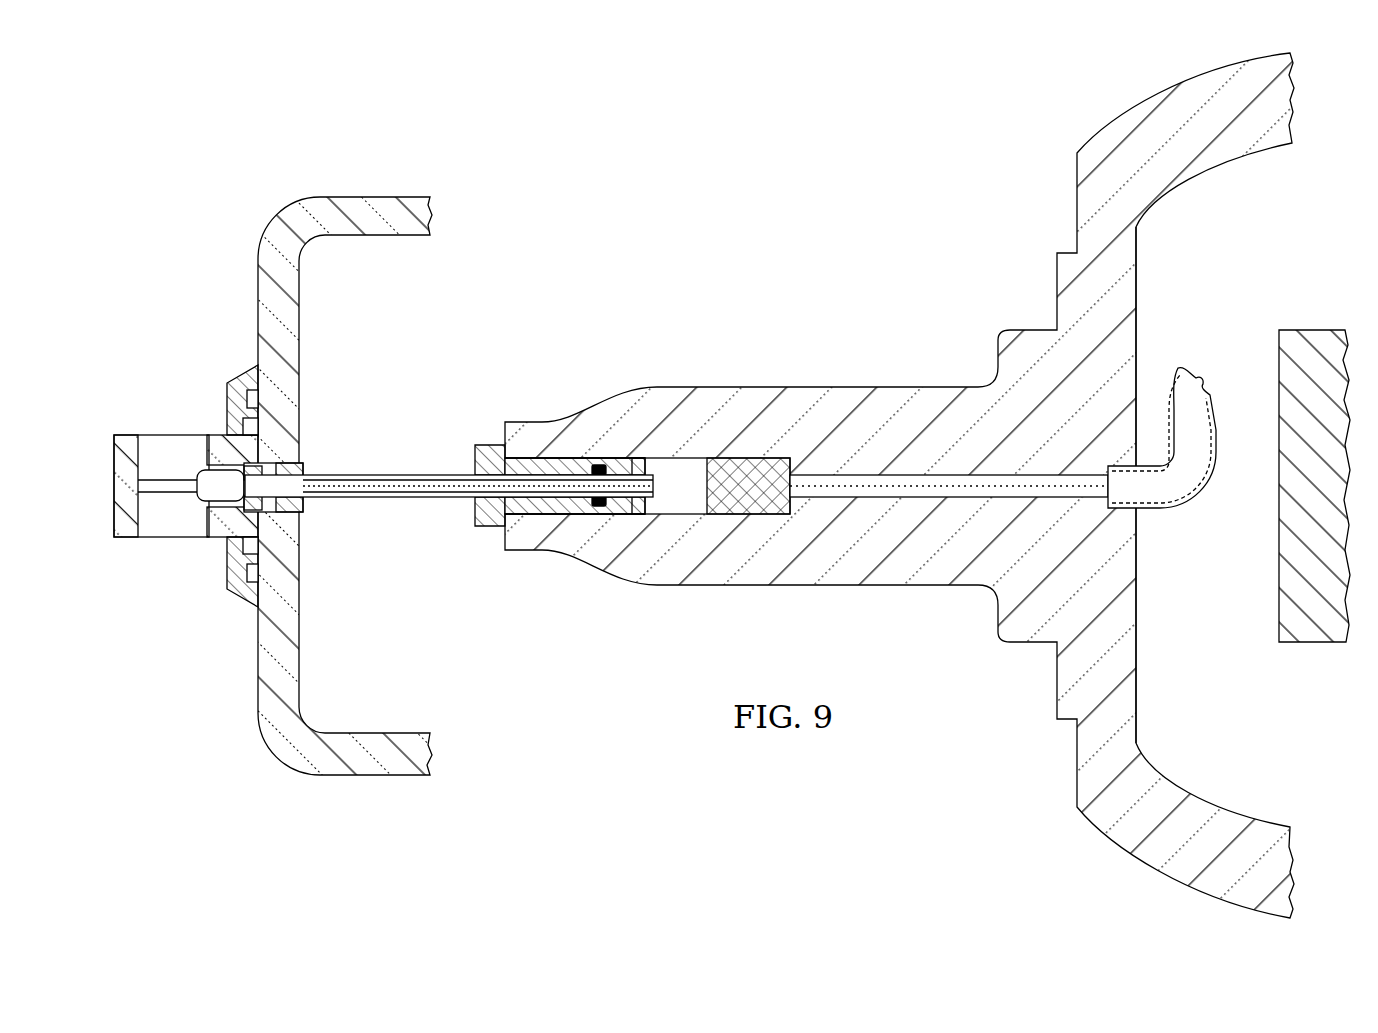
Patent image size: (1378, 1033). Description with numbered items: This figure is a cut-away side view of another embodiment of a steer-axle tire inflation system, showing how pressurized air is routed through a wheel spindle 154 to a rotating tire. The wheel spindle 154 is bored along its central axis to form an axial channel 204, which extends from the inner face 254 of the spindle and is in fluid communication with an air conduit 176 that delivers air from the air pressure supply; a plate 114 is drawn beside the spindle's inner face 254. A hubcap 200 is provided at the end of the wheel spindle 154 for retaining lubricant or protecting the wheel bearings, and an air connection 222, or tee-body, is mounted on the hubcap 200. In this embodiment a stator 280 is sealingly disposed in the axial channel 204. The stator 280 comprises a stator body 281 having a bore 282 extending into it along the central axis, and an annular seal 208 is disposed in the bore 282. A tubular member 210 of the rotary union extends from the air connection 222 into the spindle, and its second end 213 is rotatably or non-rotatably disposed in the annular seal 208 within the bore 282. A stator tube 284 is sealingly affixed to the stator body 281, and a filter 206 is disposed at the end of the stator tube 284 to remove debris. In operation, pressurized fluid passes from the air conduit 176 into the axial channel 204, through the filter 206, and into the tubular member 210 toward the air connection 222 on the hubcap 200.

The plate 114 is at (1322, 330).
The wheel spindle 154 is at (898, 387).
The air conduit 176 is at (1182, 502).
The hubcap 200 is at (257, 652).
The axial channel 204 is at (1040, 477).
The filter 206 is at (750, 460).
The first annular seal 208 is at (598, 463).
The tubular member 210 is at (365, 475).
The second end 213 is at (648, 460).
The air connection 222 is at (178, 435).
The inner face 254 is at (1138, 605).
The stator 280 is at (464, 515).
The stator body 281 is at (500, 445).
The bore 282 is at (475, 470).
The stator tube 284 is at (693, 459).